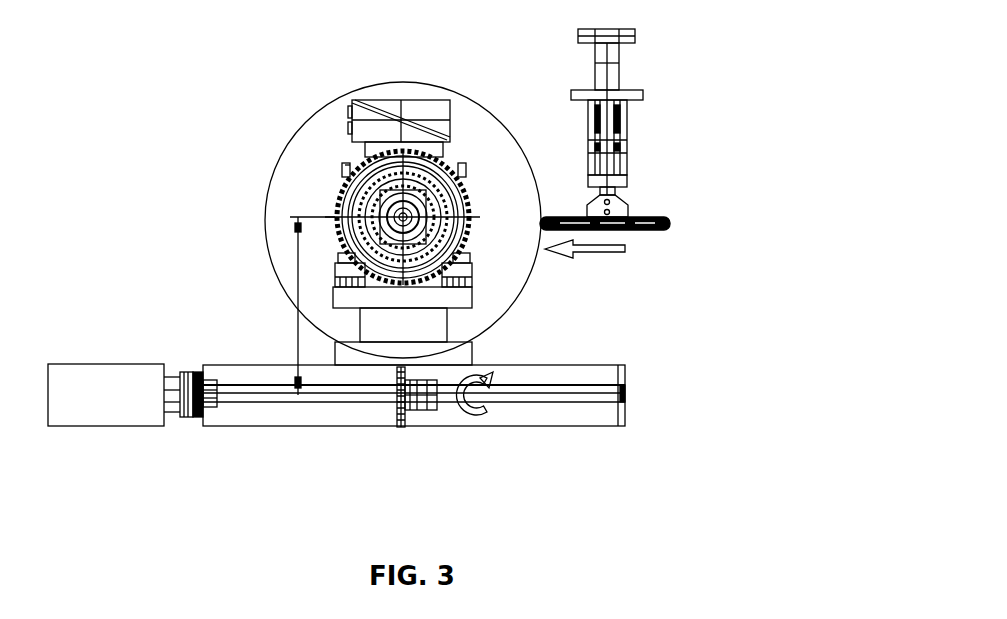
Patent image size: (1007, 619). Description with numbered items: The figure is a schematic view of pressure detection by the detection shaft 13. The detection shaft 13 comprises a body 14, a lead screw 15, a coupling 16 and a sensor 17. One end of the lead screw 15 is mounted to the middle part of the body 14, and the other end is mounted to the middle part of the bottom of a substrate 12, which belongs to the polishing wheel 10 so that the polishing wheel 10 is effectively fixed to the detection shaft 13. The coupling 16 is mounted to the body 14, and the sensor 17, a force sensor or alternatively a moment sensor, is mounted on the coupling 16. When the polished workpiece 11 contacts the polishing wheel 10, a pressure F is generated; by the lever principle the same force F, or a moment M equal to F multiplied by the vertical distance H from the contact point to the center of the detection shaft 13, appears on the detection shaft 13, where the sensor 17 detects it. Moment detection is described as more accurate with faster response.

The polishing wheel 10 is at (292, 187).
The polished workpiece 11 is at (658, 213).
The substrate 12 is at (467, 356).
The detection shaft 13 is at (627, 424).
The body 14 is at (520, 415).
The lead screw 15 is at (397, 418).
The coupling 16 is at (190, 417).
The sensor 17 is at (121, 420).